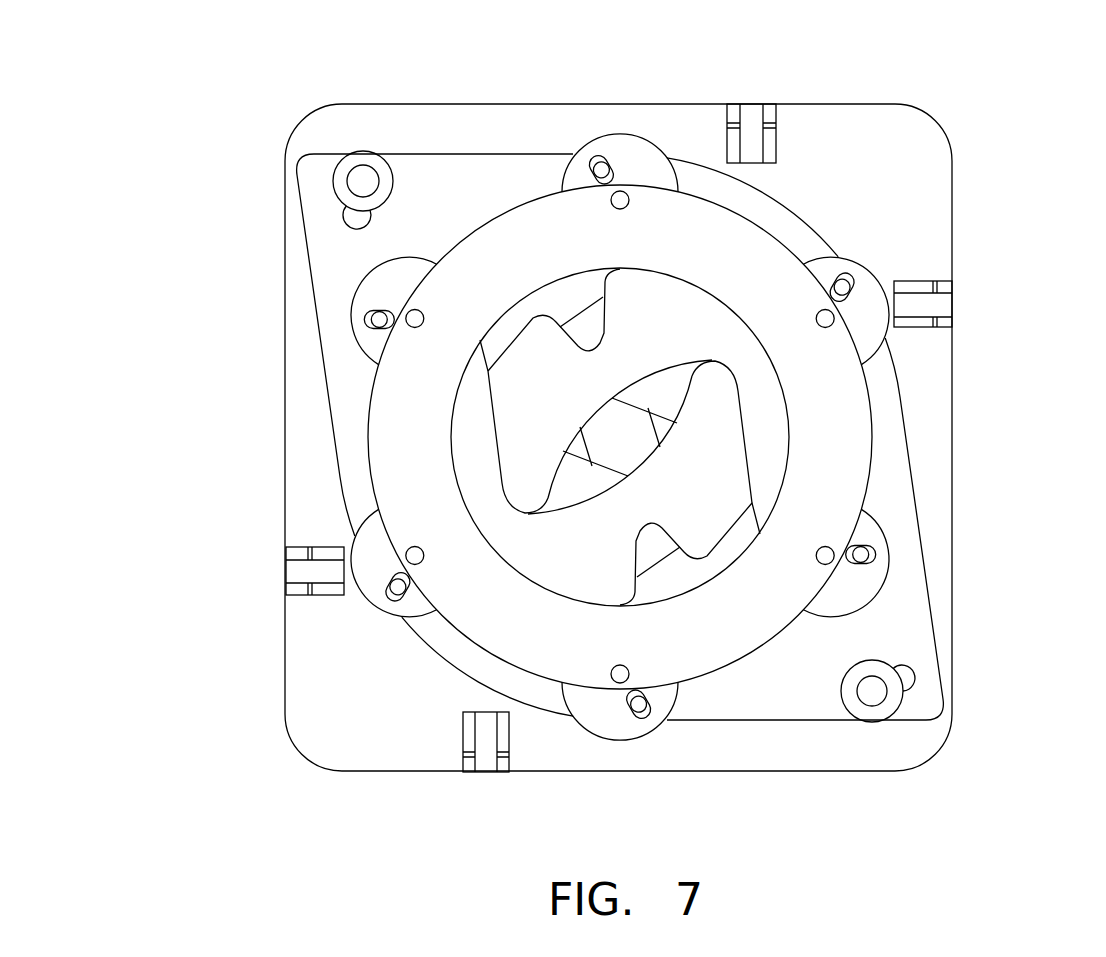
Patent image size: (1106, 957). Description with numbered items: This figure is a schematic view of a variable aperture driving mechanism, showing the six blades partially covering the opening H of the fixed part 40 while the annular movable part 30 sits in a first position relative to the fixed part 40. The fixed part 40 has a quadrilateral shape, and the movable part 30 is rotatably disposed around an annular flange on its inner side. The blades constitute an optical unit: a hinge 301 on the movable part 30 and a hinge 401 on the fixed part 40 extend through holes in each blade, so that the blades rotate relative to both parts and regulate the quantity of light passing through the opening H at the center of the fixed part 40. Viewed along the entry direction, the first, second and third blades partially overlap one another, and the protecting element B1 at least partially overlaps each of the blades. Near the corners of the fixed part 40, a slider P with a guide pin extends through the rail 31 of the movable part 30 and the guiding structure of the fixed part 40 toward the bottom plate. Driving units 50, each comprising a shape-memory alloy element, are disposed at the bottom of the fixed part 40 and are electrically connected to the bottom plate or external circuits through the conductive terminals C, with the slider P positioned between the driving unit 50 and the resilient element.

The fixed part 40 is at (275, 283).
The movable part 30 is at (309, 333).
The rail 31 is at (350, 216).
The slider P is at (365, 158).
The conductive terminals C is at (749, 127).
The driving unit 50 is at (769, 123).
The protecting element B1 is at (752, 256).
The opening H is at (618, 438).
The hinge 401 is at (611, 197).
The hinge 301 is at (597, 167).